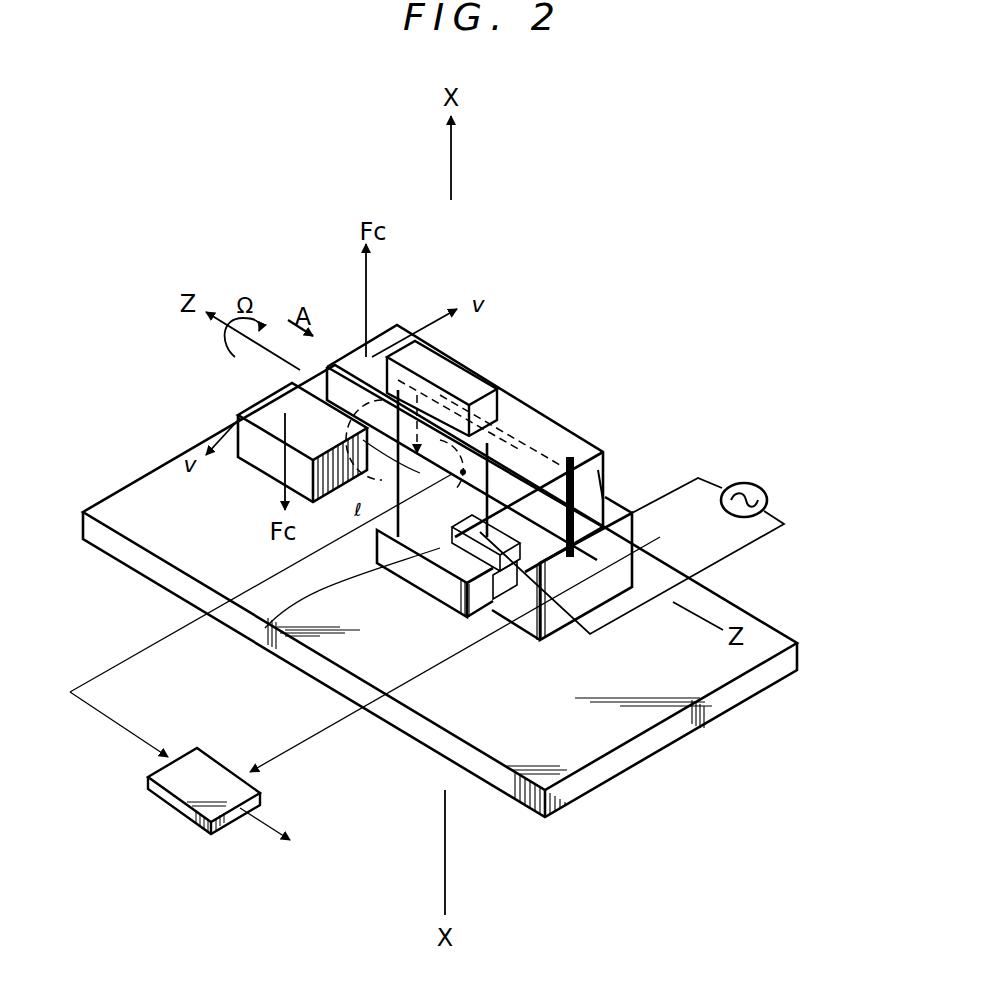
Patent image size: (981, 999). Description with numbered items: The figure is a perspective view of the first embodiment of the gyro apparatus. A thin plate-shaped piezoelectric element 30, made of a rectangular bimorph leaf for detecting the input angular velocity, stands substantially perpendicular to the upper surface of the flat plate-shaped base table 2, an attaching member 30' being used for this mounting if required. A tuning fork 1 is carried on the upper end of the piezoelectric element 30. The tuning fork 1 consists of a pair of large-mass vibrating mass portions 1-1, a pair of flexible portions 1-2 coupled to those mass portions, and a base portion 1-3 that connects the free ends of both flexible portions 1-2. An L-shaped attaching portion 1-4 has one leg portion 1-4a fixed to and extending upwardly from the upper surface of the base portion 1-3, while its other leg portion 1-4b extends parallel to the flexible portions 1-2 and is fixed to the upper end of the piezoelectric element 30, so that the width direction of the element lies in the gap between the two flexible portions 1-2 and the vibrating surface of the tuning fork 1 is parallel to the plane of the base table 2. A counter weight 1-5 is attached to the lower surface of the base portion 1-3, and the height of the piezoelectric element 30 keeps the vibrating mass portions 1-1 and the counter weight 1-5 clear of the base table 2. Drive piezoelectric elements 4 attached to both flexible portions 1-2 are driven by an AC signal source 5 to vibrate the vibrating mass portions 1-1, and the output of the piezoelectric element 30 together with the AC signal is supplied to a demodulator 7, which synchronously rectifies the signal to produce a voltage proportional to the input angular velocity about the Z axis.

The tuning fork 1 is at (491, 401).
The vibrating mass portions 1-1 is at (307, 393).
The flexible portions 1-2 is at (515, 423).
The base portion 1-3 is at (533, 543).
The L-shaped attaching portion 1-4 is at (533, 540).
The leg portion 1-4a is at (598, 470).
The leg portion 1-4b is at (455, 338).
The counter weight 1-5 is at (590, 593).
The base table 2 is at (493, 741).
The drive piezoelectric elements 4 is at (445, 565).
The AC signal source 5 is at (746, 484).
The demodulator 7 is at (185, 805).
The piezoelectric element 30 is at (302, 464).
The attaching member 30' is at (320, 611).